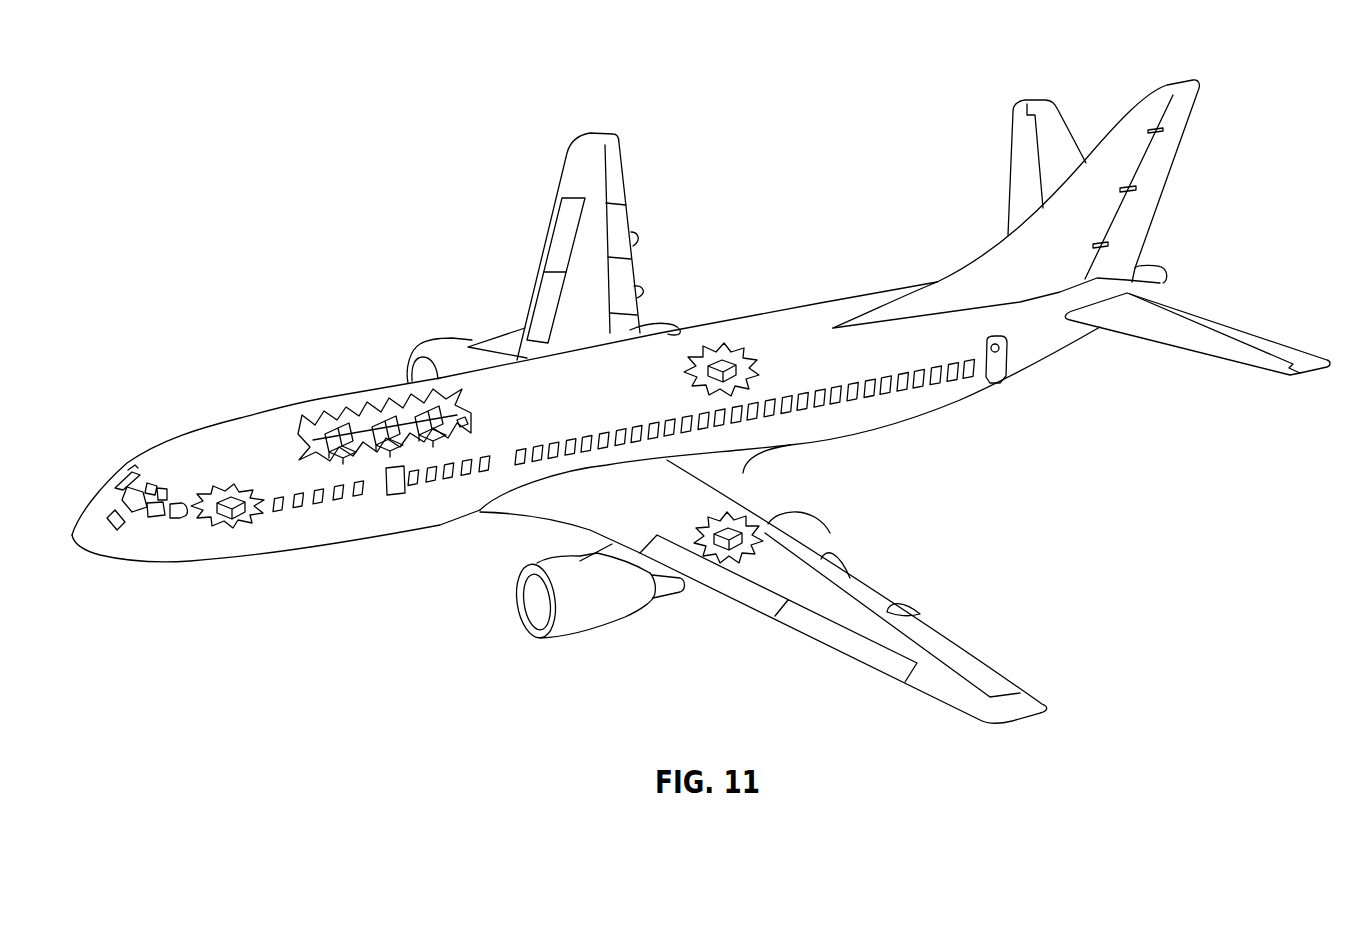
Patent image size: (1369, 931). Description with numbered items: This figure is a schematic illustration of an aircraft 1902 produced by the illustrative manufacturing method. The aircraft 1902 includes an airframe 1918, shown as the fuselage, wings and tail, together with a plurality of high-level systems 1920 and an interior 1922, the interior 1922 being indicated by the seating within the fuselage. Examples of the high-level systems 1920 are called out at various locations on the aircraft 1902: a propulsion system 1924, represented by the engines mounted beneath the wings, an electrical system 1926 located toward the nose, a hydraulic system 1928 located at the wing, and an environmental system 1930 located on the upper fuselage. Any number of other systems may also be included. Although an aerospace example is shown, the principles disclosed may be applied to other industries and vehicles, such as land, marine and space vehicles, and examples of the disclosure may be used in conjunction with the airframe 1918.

The aircraft 1902 is at (197, 279).
The airframe 1918 is at (331, 393).
The high-level systems 1920 is at (1076, 531).
The interior 1922 is at (362, 452).
The propulsion system 1924 is at (451, 350).
The electrical system 1926 is at (230, 500).
The hydraulic system 1928 is at (727, 532).
The environmental system 1930 is at (725, 365).